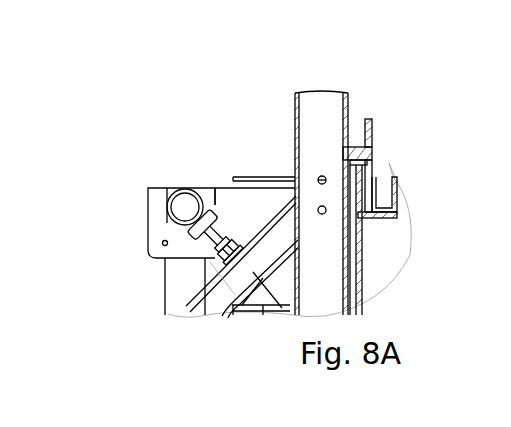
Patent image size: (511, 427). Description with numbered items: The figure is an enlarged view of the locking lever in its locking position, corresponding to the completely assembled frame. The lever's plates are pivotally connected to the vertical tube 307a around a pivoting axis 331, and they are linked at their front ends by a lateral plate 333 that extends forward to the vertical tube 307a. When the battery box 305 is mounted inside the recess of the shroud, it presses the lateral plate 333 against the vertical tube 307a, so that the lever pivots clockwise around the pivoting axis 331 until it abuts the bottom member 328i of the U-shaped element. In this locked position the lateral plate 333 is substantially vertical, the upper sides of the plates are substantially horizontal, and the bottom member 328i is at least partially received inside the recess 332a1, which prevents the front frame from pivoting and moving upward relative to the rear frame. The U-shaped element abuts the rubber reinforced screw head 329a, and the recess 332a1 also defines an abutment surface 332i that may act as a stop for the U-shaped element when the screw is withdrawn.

The vertical tube 307a is at (350, 104).
The pivoting axis 331 is at (326, 207).
The lateral plate 333 is at (353, 245).
The battery box 305 is at (360, 273).
The rubber reinforced screw head 329a is at (228, 186).
The bottom member 328i is at (178, 188).
The abutment surface 332i is at (209, 188).
The recess 332a1 is at (207, 222).